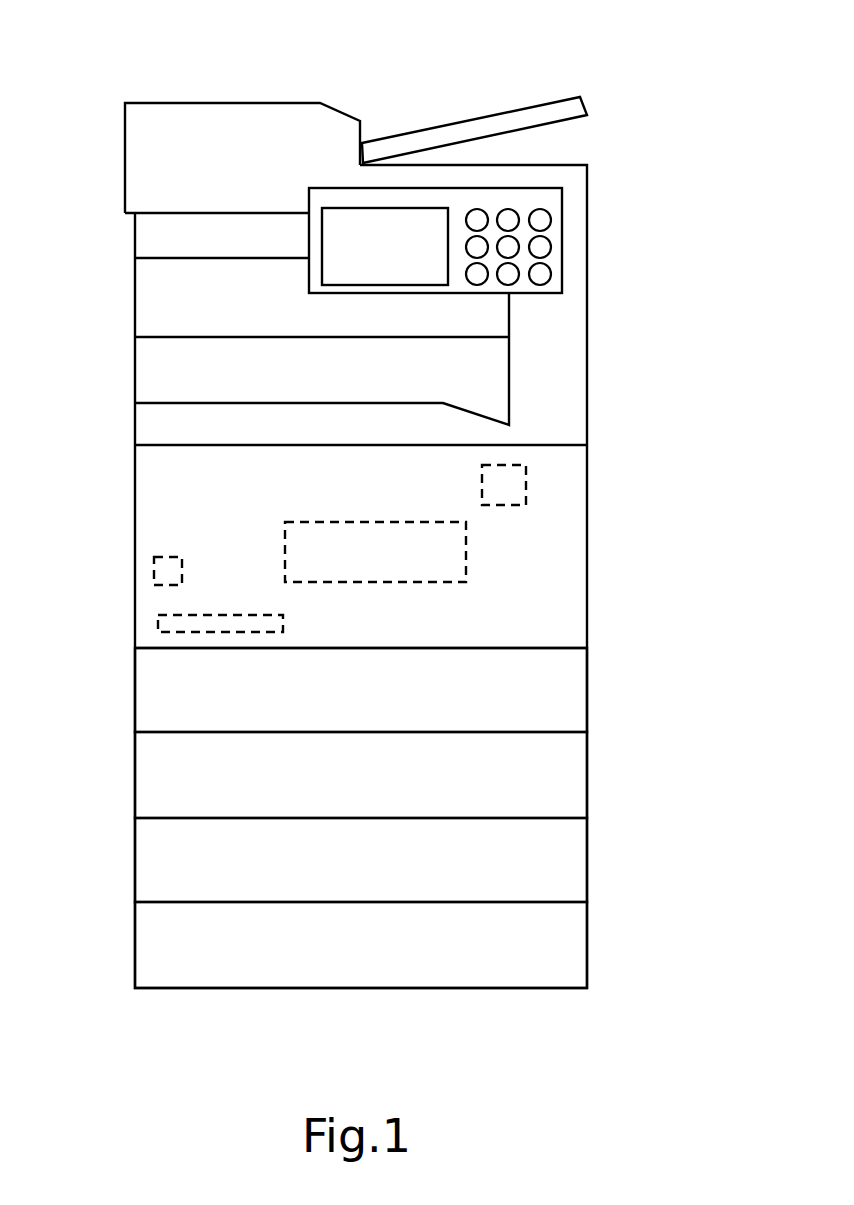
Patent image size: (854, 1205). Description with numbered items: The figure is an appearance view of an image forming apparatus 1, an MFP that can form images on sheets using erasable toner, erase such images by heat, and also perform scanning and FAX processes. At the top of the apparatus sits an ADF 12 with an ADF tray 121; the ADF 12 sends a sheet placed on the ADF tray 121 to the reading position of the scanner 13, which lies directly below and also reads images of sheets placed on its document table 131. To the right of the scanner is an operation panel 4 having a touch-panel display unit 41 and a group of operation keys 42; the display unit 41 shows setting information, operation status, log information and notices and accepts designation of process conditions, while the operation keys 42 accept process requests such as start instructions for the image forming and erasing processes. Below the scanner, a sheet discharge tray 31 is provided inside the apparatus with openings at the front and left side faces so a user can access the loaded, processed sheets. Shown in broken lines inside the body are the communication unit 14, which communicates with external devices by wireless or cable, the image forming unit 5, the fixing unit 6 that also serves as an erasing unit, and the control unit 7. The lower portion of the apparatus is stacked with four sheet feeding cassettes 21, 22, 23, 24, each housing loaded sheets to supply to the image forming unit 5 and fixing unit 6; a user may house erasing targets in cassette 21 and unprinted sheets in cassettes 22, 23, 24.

The image forming apparatus 1 is at (233, 103).
The ADF 12 is at (157, 123).
The ADF tray 121 is at (460, 122).
The scanner 13 is at (151, 238).
The document table 131 is at (215, 212).
The operation panel 4 is at (503, 219).
The display unit 41 is at (437, 207).
The operation keys 42 is at (558, 247).
The sheet discharge tray 31 is at (325, 402).
The image forming unit 5 is at (328, 522).
The fixing unit 6 is at (526, 480).
The communication unit 14 is at (170, 557).
The control unit 7 is at (284, 622).
The sheet feeding cassette 21 is at (588, 690).
The sheet feeding cassette 22 is at (588, 776).
The sheet feeding cassette 23 is at (588, 862).
The sheet feeding cassette 24 is at (588, 947).